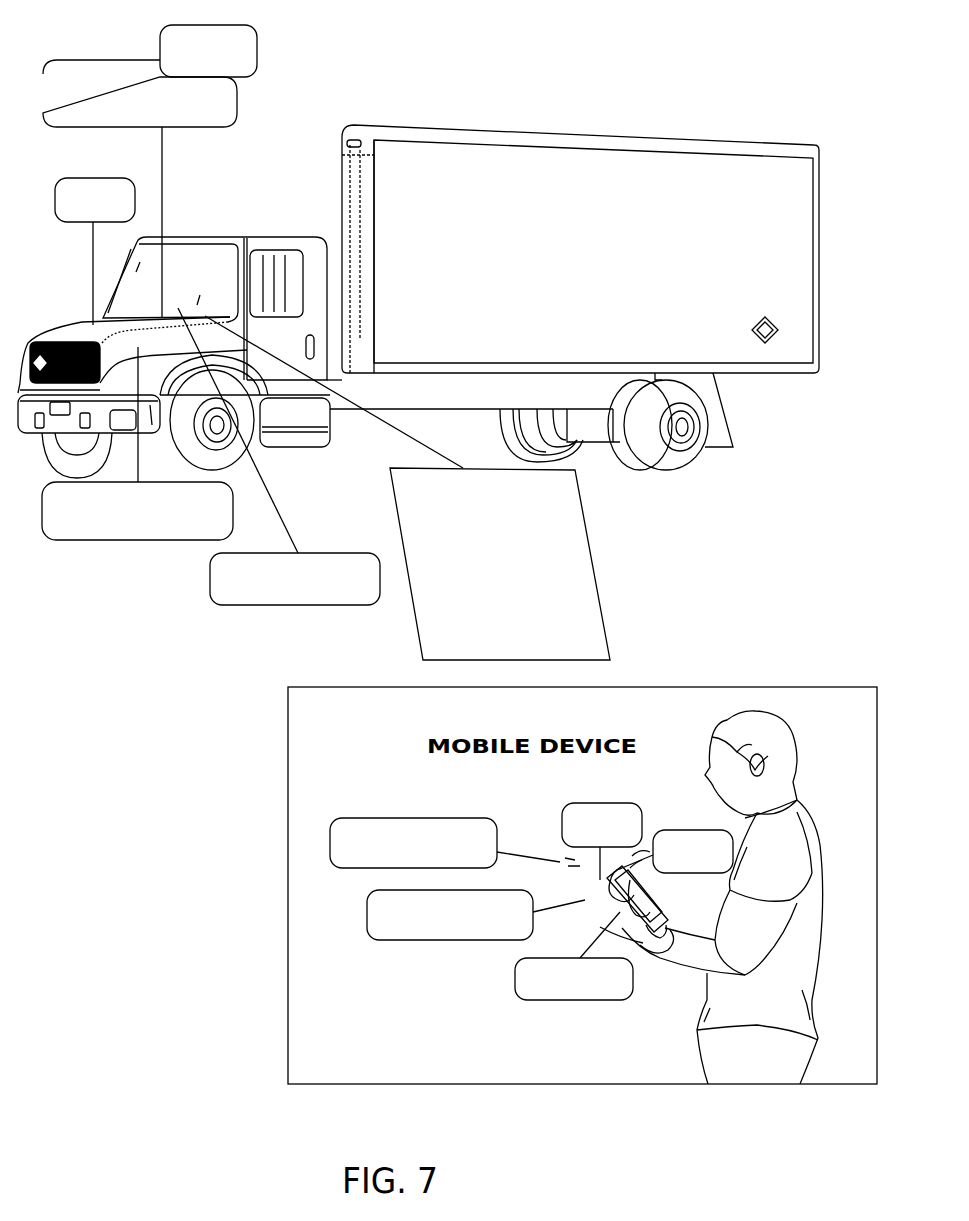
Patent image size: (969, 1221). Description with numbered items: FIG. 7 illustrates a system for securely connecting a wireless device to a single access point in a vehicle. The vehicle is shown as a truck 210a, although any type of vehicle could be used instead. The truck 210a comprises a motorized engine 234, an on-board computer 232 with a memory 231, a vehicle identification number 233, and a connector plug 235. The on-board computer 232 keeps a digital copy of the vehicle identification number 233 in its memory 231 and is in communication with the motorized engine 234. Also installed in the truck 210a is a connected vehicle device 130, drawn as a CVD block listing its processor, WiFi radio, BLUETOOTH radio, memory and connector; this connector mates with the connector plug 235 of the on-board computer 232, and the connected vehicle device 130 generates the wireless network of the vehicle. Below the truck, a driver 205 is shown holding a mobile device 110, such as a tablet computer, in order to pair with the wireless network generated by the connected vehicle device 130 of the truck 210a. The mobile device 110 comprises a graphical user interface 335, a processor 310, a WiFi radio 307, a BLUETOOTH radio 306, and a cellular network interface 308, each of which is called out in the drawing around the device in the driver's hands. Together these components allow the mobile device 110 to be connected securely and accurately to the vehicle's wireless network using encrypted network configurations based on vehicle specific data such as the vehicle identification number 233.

The truck 210a is at (765, 138).
The memory 231 is at (233, 25).
The on-board computer 232 is at (68, 60).
The vehicle identification number 233 is at (78, 178).
The motorized engine 234 is at (83, 542).
The connector plug 235 is at (270, 606).
The connected vehicle device 130 is at (588, 523).
The driver 205 is at (814, 822).
The mobile device 110 is at (583, 902).
The cellular network interface 308 is at (380, 818).
The graphical user interface 335 is at (590, 804).
The WiFi radio 307 is at (665, 830).
The BLUETOOTH radio 306 is at (405, 940).
The processor 310 is at (548, 1000).